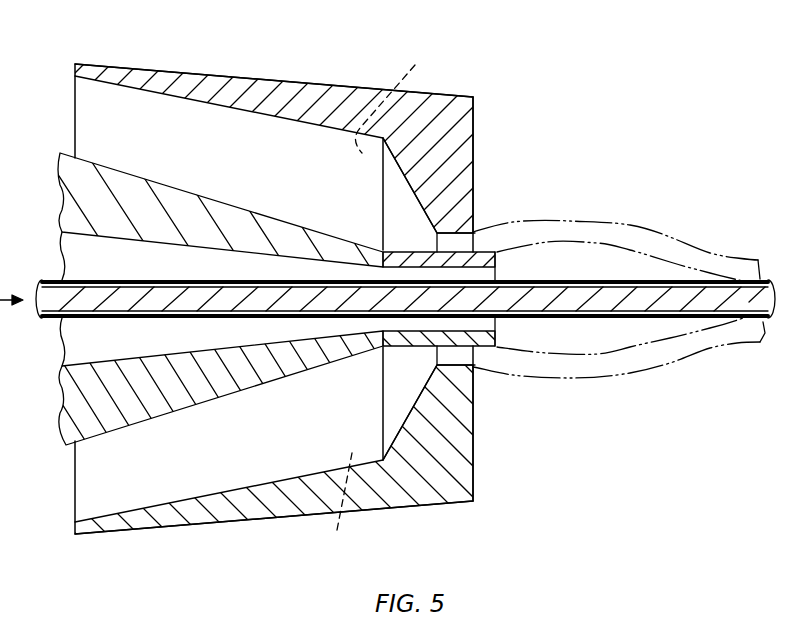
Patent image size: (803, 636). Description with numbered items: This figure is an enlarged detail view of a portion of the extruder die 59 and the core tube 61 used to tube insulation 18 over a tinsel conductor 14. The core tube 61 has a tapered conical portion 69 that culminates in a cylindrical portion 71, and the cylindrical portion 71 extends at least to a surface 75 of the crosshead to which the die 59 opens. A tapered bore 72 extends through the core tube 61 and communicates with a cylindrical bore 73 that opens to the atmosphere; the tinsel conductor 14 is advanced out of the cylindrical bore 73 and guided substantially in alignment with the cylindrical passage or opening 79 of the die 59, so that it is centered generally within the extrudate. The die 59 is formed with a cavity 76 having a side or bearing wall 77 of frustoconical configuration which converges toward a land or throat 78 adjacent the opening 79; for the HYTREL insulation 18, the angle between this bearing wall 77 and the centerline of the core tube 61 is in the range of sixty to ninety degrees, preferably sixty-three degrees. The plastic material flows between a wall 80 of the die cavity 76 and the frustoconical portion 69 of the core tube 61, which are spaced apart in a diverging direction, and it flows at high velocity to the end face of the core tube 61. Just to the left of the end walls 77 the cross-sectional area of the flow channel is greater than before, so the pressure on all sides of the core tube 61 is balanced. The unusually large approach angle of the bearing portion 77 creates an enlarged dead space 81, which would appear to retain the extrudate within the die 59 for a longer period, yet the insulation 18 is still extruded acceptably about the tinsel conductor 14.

The tinsel conductor 14 is at (60, 350).
The insulation 18 is at (629, 228).
The die 59 is at (420, 504).
The core tube 61 is at (91, 442).
The tapered conical portion 69 is at (168, 187).
The cylindrical portion 71 is at (487, 341).
The tapered bore 72 is at (60, 242).
The cylindrical bore 73 is at (453, 267).
The surface of the crosshead 75 is at (475, 438).
The die cavity 76 is at (262, 122).
The frustoconical bearing wall 77 is at (407, 182).
The land or throat 78 is at (473, 200).
The die opening 79 is at (476, 233).
The wall of die cavity 80 is at (342, 87).
The dead space 81 is at (378, 299).